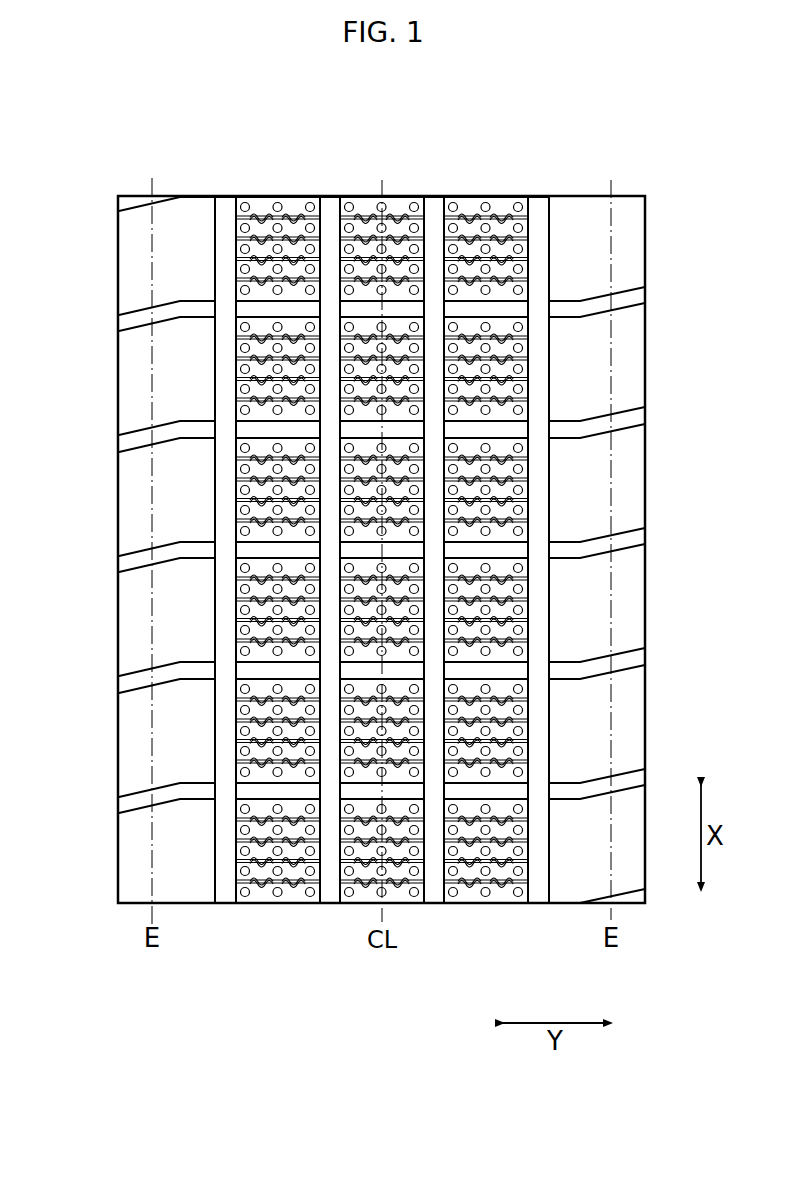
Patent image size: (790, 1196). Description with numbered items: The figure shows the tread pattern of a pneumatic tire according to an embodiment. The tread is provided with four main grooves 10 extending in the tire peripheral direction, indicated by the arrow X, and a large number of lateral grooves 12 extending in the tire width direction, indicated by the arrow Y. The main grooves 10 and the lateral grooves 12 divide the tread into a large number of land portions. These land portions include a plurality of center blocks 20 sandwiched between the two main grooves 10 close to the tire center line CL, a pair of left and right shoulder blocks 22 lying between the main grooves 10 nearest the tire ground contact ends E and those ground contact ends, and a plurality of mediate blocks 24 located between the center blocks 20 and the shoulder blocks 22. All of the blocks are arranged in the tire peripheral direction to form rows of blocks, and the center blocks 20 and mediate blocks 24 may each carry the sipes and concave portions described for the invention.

The main groove 10 is at (376, 517).
The lateral groove 12 is at (378, 550).
The center block 20 is at (382, 544).
The shoulder block 22 is at (379, 534).
The mediate block 24 is at (382, 526).